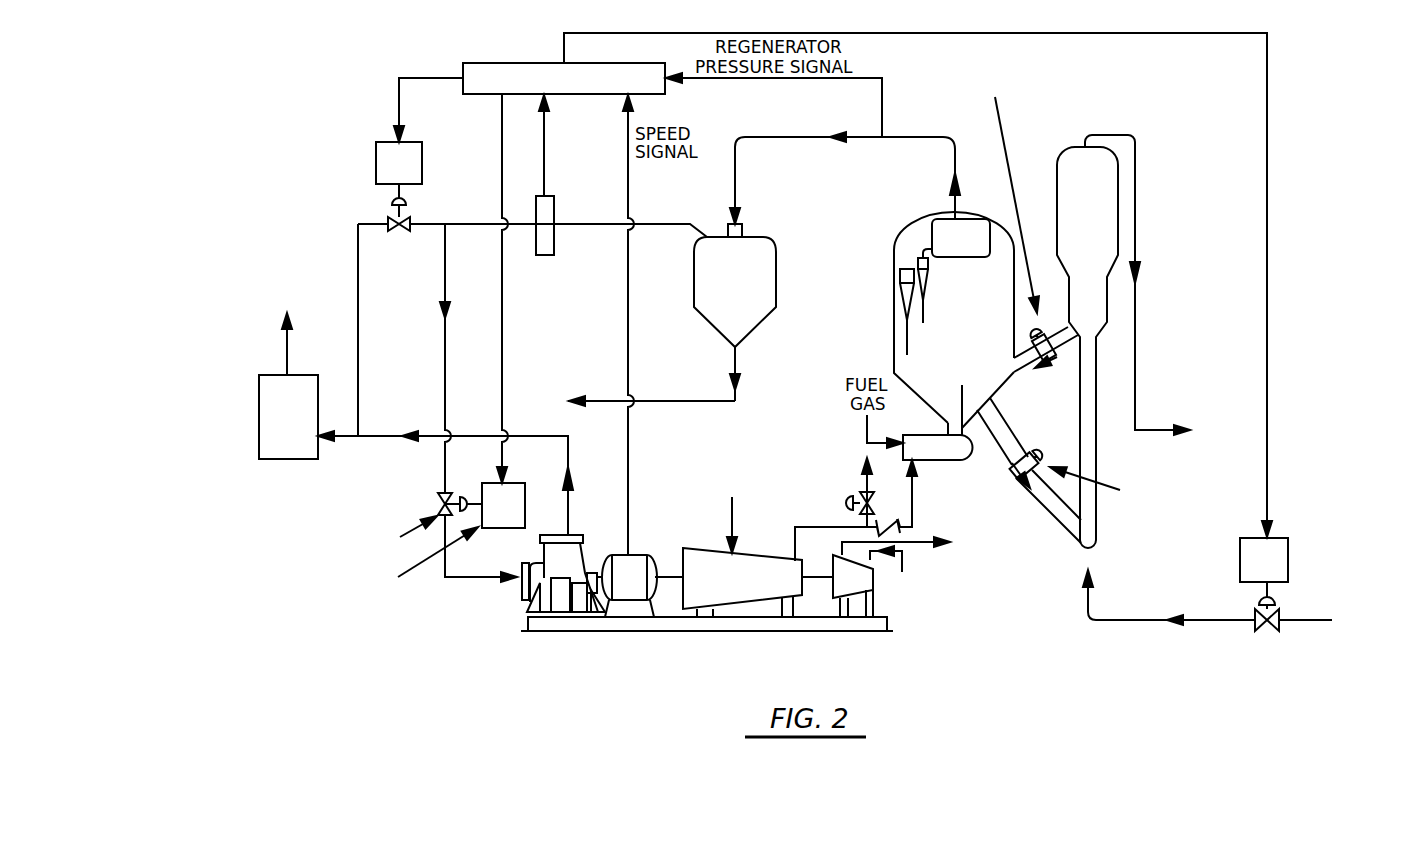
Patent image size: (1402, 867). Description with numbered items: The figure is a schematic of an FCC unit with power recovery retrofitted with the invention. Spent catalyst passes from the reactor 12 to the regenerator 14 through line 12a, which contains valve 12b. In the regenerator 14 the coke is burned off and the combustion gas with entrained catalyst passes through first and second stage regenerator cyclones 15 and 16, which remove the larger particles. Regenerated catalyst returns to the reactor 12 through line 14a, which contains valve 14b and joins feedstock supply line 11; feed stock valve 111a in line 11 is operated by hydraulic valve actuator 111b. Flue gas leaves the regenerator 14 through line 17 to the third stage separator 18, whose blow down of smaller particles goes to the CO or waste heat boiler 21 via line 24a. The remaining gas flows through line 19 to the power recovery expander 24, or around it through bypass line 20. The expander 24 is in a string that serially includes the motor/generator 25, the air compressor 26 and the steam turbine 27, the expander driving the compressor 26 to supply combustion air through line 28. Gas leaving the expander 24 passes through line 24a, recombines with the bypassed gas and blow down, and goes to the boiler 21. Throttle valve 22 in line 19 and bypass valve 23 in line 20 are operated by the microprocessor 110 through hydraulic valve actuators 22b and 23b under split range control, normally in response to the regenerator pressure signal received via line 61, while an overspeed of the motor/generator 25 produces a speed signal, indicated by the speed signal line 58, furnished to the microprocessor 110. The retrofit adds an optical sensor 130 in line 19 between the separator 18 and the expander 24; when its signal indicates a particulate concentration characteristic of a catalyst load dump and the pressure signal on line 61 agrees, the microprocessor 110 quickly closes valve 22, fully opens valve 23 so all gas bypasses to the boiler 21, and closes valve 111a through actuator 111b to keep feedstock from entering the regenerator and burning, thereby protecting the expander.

The microprocessor 110 is at (460, 62).
The hydraulic valve actuator 23b is at (424, 158).
The bypass valve 23 is at (410, 203).
The optical sensor 130 is at (533, 261).
The speed signal line 58 is at (632, 352).
The bypass line 20 is at (362, 338).
The line 19 is at (450, 357).
The line 24a is at (372, 433).
The CO or waste heat boiler 21 is at (258, 408).
The throttle valve 22 is at (440, 495).
The hydraulic valve actuator 22b is at (507, 482).
The power recovery expander 24 is at (525, 603).
The motor/generator 25 is at (627, 588).
The air compressor 26 is at (750, 588).
The steam turbine 27 is at (857, 588).
The line 28 is at (914, 508).
The third stage separator 18 is at (692, 280).
The line 17 is at (915, 143).
The line 61 is at (887, 105).
The regenerator 14 is at (1005, 217).
The second stage regenerator cyclone 16 is at (920, 268).
The first stage regenerator cyclone 15 is at (907, 300).
The reactor 12 is at (1118, 200).
The valve 12b is at (1038, 320).
The line 12a is at (1023, 368).
The line 14a is at (1012, 455).
The valve 14b is at (1050, 448).
The feedstock supply line 11 is at (1137, 625).
The feed stock valve 111a is at (1267, 625).
The hydraulic valve actuator 111b is at (1240, 557).